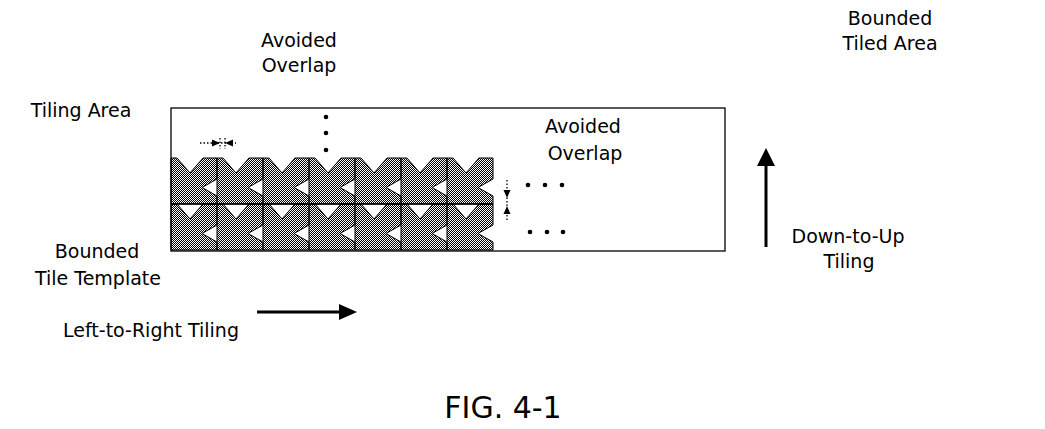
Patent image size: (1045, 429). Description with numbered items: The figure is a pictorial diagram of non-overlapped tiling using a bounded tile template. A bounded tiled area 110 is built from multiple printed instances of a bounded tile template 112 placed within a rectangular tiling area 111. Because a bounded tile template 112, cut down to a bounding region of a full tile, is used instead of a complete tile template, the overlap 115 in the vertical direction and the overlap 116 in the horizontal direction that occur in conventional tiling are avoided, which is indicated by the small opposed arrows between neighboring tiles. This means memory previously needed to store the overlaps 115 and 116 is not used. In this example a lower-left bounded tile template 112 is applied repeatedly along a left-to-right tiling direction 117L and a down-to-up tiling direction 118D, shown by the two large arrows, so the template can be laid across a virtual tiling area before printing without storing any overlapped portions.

The bounded tiled area 110 is at (493, 182).
The tiling area 111 is at (171, 108).
The bounded tile template 112 is at (172, 252).
The overlap in a vertical direction 115 is at (236, 143).
The overlap in a horizontal direction 116 is at (507, 182).
The left-to-right tiling direction 117L is at (258, 312).
The down-to-up tiling direction 118D is at (772, 235).